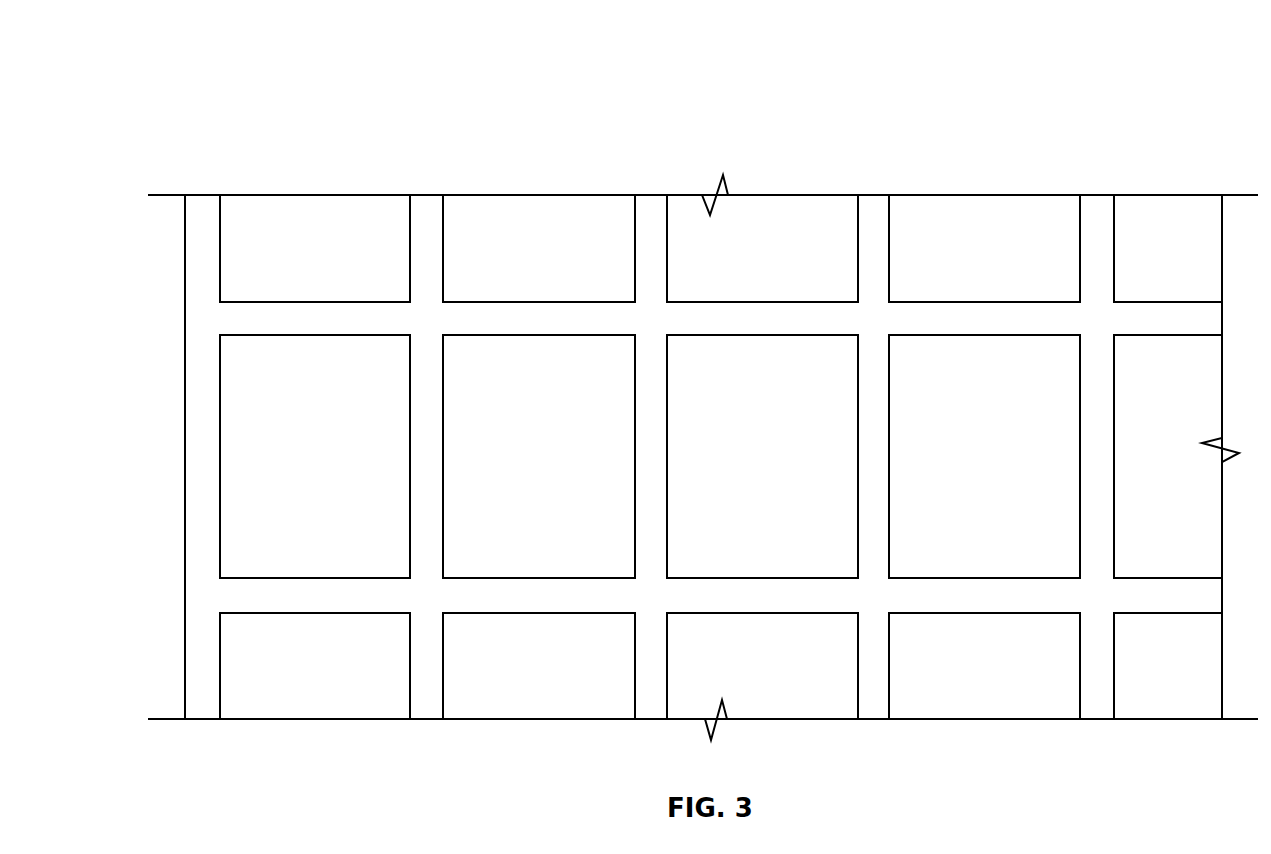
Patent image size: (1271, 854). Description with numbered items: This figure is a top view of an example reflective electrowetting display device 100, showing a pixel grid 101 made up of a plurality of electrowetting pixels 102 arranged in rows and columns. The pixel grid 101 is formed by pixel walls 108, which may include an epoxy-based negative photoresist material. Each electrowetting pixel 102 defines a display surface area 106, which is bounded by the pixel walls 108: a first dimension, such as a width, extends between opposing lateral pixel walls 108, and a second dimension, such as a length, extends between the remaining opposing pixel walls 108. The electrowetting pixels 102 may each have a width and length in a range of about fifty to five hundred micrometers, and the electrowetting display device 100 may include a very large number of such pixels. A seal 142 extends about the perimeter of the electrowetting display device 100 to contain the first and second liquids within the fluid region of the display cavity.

The reflective electrowetting display device 100 is at (988, 70).
The pixel grid 101 is at (755, 172).
The electrowetting pixels 102 is at (721, 457).
The display surface area 106 is at (305, 562).
The pixel walls 108 is at (424, 205).
The seal 142 is at (200, 385).